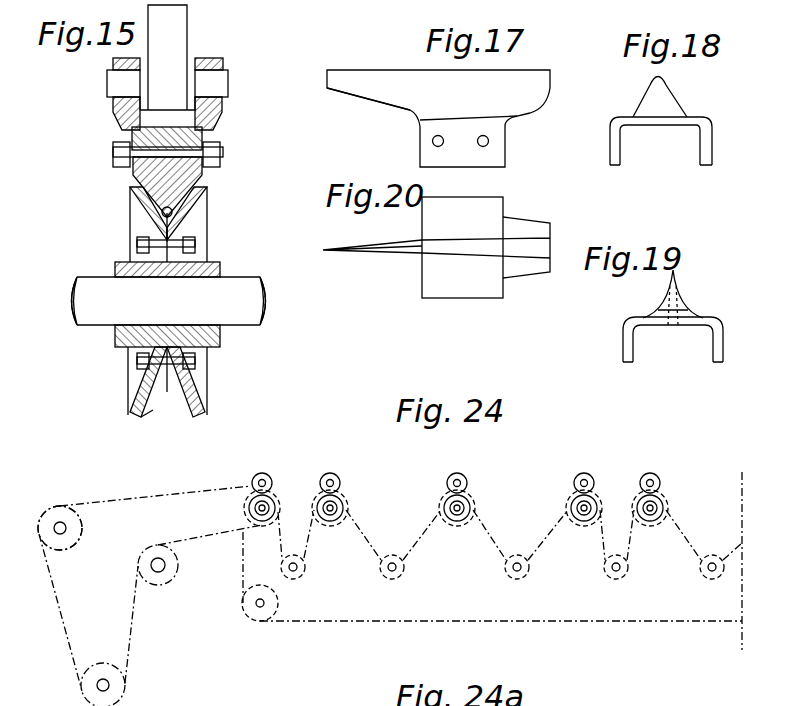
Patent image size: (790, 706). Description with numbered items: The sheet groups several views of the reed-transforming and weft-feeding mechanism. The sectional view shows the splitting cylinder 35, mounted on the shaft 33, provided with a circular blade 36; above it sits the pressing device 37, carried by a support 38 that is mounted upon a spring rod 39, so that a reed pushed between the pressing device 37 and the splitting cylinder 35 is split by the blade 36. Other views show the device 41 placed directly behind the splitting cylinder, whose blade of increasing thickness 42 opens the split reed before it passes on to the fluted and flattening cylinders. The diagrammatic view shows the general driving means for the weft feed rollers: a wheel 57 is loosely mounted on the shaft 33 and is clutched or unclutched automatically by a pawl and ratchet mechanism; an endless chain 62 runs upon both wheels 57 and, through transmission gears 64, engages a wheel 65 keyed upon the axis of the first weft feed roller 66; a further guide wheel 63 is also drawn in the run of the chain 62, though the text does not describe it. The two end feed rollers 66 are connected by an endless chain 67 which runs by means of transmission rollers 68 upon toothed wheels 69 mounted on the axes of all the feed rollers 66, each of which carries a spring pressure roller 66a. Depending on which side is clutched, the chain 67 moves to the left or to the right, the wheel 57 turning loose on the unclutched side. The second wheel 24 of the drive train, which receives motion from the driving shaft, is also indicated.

In FIG. 15, the spring rod 39 is at (167, 57).
In FIG. 15, the support 38 is at (118, 118).
In FIG. 15, the pressing device 37 is at (200, 175).
In FIG. 15, the splitting cylinder 35 is at (138, 220).
In FIG. 15, the shaft 33 is at (169, 304).
In FIG. 24, the shaft 33 is at (61, 535).
In FIG. 15, the circular blade 36 is at (153, 410).
In FIG. 17, the device 41 is at (438, 118).
In FIG. 20, the device 41 is at (486, 247).
In FIG. 18, the device 41 is at (661, 121).
In FIG. 19, the device 41 is at (673, 339).
In FIG. 17, the blade of increasing thickness 42 is at (355, 90).
In FIG. 20, the blade of increasing thickness 42 is at (388, 252).
In FIG. 19, the blade of increasing thickness 42 is at (668, 288).
In FIG. 24, the wheel 57 is at (57, 505).
In FIG. 24, the wheel 65 is at (85, 530).
In FIG. 24, the transmission gears 64 is at (158, 582).
In FIG. 24, the pulley 63 is at (120, 695).
In FIG. 24, the endless chain 62 is at (162, 493).
In FIG. 24, the toothed wheels 69 is at (278, 493).
In FIG. 24, the spring pressure rollers 66a is at (462, 470).
In FIG. 24, the weft feed roller 66 is at (457, 522).
In FIG. 24, the transmission rollers 68 is at (393, 570).
In FIG. 24, the endless chain 67 is at (357, 523).
In FIG. 24, the second wheel 24 is at (737, 545).